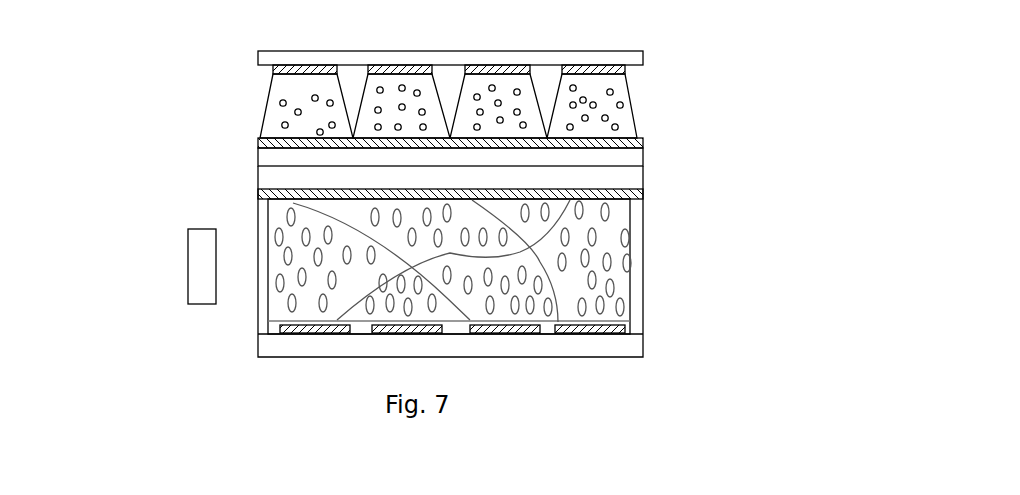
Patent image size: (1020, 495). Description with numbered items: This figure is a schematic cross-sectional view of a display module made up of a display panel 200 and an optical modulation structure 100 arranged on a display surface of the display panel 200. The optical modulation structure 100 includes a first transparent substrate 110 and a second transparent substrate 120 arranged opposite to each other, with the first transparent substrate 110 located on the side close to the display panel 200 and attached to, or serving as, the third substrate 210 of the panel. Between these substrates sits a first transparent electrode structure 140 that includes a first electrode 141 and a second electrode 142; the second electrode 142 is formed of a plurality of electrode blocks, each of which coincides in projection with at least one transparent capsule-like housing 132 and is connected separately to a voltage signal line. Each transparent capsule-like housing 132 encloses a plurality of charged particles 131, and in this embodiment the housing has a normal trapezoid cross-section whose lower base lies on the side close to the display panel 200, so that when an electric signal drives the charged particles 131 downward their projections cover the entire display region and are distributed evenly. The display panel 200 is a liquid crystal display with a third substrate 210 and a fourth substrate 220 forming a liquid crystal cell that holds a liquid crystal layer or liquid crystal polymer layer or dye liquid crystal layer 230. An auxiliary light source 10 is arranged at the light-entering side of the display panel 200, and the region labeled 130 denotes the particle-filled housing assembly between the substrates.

The auxiliary light source 10 is at (195, 271).
The optical modulation structure 100 is at (832, 23).
The first transparent substrate 110 is at (643, 158).
The second transparent substrate 120 is at (643, 55).
The color conversion layer 130 is at (341, 106).
The charged particle 131 is at (280, 130).
The transparent capsule-like housing 132 is at (265, 112).
The first transparent electrode structure 140 is at (758, 70).
The first electrode 141 is at (643, 142).
The second electrode 142 is at (643, 72).
The display panel 200 is at (832, 180).
The third substrate 210 is at (643, 181).
The fourth substrate 220 is at (643, 343).
The liquid crystal layer or liquid crystal polymer layer or dye liquid crystal layer 230 is at (597, 254).